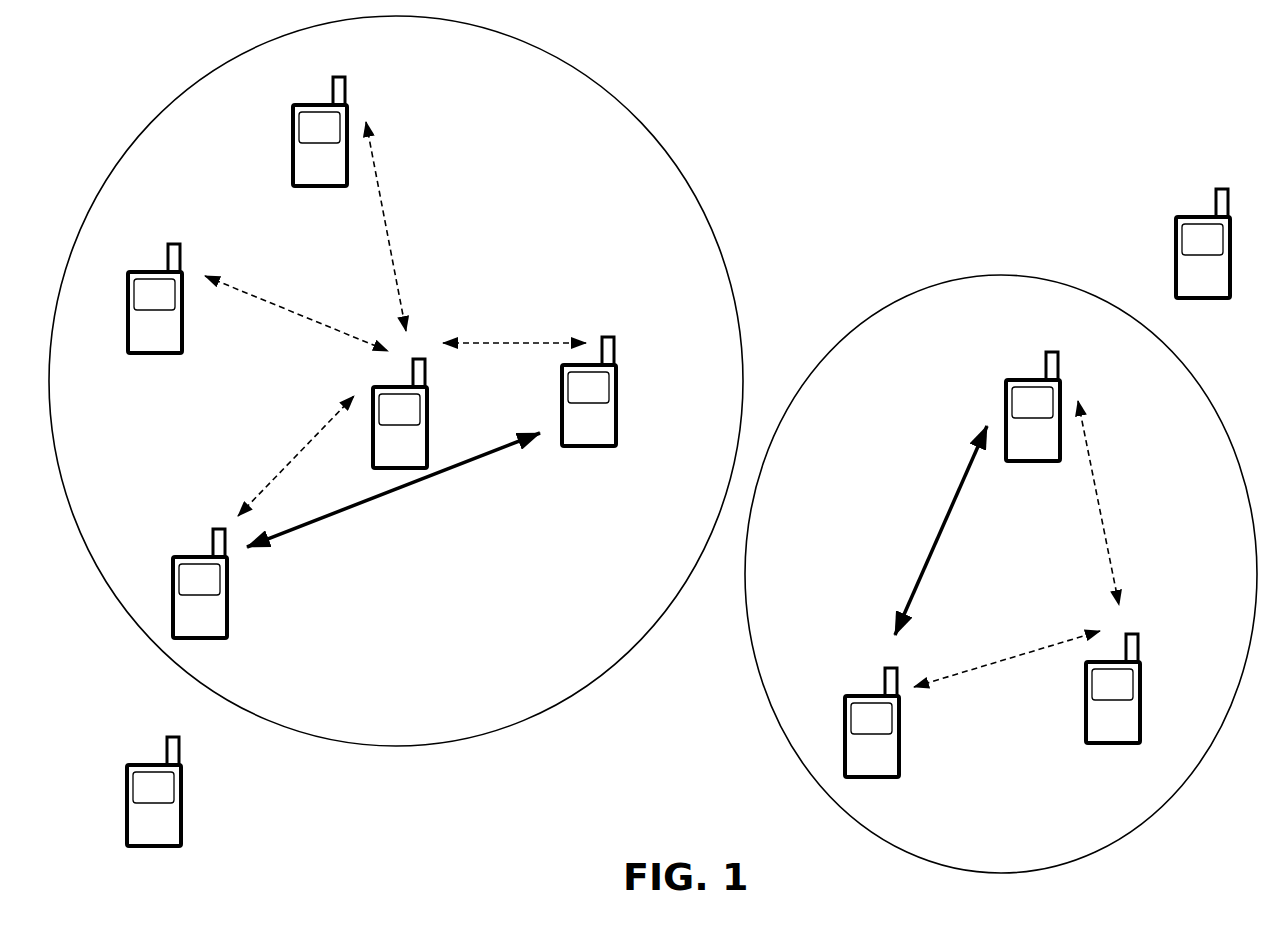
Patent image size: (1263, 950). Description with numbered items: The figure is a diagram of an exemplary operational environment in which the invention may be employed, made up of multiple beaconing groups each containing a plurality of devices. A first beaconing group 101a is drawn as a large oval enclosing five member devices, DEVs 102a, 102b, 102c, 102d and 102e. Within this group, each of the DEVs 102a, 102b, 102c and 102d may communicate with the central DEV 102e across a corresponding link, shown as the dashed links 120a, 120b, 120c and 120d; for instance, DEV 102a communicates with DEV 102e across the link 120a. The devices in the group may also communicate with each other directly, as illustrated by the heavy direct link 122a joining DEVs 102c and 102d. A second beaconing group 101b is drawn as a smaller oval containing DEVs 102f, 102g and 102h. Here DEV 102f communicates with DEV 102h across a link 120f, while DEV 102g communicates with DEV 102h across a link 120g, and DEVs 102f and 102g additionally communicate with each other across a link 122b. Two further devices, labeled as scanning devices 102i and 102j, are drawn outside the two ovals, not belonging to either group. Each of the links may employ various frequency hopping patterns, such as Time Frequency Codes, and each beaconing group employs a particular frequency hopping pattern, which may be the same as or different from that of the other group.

The beaconing group 101a is at (623, 100).
The beaconing group 101b is at (1045, 276).
The device (DEV) 102a is at (182, 263).
The device (DEV) 102b is at (347, 98).
The device (DEV) 102c is at (213, 537).
The device (DEV) 102d is at (617, 354).
The device (DEV) 102e is at (428, 408).
The device (DEV) 102f is at (899, 688).
The device (DEV) 102g is at (1060, 373).
The device (DEV) 102h is at (1142, 688).
The scanning device 102i is at (181, 762).
The scanning device 102j is at (1175, 228).
The link 120a is at (263, 298).
The link 120b is at (387, 228).
The link 120c is at (300, 450).
The link 120d is at (530, 343).
The link 120f is at (957, 673).
The link 120g is at (1100, 498).
The direct link 122a is at (460, 465).
The link 122b is at (950, 510).